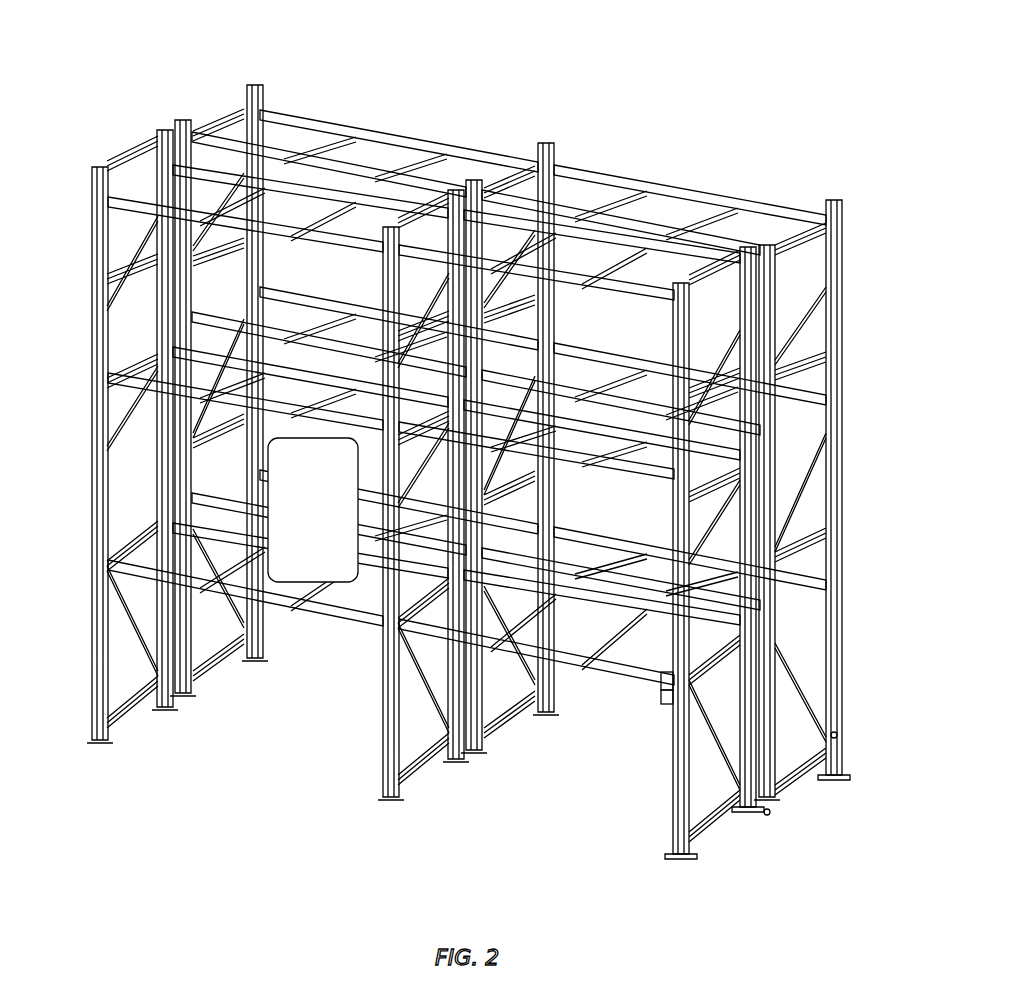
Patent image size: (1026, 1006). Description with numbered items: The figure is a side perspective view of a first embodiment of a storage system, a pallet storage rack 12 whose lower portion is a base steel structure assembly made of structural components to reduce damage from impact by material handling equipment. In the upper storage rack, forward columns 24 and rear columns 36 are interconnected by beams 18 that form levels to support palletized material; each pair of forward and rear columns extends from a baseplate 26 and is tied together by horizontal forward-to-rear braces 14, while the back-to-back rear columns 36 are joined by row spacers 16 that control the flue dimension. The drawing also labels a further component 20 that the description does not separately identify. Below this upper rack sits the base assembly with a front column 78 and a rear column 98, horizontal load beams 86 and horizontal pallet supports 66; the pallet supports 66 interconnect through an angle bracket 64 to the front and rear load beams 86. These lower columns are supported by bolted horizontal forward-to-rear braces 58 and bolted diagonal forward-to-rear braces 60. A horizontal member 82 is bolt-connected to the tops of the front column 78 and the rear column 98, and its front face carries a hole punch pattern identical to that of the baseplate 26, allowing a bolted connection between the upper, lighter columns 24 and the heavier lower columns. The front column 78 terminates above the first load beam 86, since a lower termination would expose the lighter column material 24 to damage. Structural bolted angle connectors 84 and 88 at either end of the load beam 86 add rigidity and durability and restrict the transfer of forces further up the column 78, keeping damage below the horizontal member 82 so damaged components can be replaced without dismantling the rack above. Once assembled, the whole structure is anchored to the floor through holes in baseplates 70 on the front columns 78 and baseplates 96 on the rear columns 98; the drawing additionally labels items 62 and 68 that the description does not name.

The storage rack 12 is at (472, 476).
The horizontal forward-to-rear braces 14 is at (811, 533).
The row spacers 16 is at (846, 380).
The beams 18 is at (592, 168).
The cross bar 20 is at (768, 206).
The forward columns 24 is at (92, 166).
The baseplate 26 is at (843, 560).
The rear columns 36 is at (158, 131).
The bolted horizontal forward-to-rear braces 58 is at (840, 615).
The bolted diagonal forward-to-rear braces 60 is at (840, 682).
The base plate 62 is at (693, 848).
The angle bracket 64 is at (603, 638).
The horizontal pallet supports 66 is at (627, 543).
The bottom strut 68 is at (815, 796).
The baseplates 70 is at (845, 782).
The front column 78 is at (846, 645).
The horizontal member 82 is at (660, 703).
The structural bolted angle connector 84 is at (437, 768).
The horizontal load beams 86 is at (617, 678).
The structural bolted angle connector 88 is at (660, 697).
The baseplates 96 is at (737, 808).
The rear column 98 is at (838, 735).